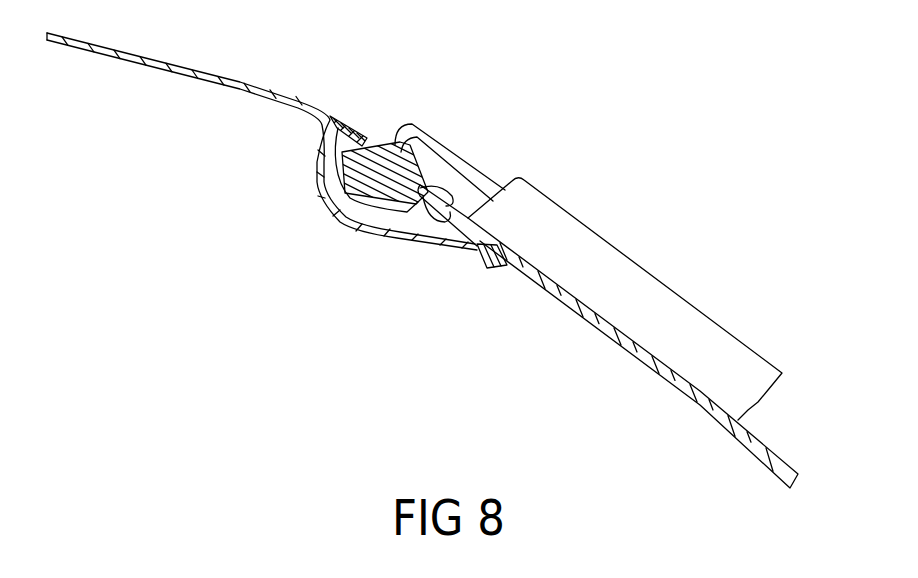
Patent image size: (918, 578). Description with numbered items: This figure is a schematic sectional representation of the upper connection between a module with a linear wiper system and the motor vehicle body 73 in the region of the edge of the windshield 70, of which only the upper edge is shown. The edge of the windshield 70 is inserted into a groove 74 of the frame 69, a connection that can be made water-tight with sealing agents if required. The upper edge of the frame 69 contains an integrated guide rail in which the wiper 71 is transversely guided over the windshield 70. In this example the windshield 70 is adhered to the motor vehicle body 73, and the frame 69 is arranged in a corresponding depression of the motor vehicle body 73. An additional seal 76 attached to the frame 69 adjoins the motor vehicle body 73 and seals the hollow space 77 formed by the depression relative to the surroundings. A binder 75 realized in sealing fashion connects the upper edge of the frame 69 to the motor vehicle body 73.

The frame 69 is at (407, 173).
The windshield 70 is at (768, 449).
The wiper 71 is at (610, 268).
The motor vehicle body 73 is at (318, 187).
The groove 74 is at (426, 206).
The binder 75 is at (487, 265).
The seal 76 is at (338, 122).
The hollow space 77 is at (358, 210).